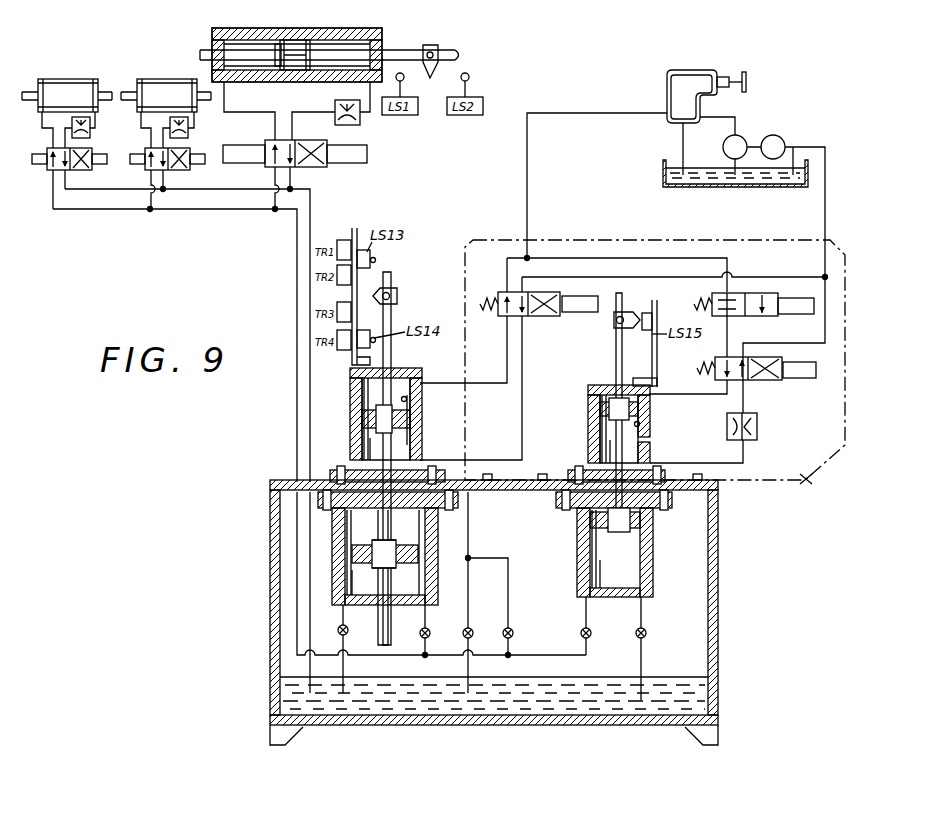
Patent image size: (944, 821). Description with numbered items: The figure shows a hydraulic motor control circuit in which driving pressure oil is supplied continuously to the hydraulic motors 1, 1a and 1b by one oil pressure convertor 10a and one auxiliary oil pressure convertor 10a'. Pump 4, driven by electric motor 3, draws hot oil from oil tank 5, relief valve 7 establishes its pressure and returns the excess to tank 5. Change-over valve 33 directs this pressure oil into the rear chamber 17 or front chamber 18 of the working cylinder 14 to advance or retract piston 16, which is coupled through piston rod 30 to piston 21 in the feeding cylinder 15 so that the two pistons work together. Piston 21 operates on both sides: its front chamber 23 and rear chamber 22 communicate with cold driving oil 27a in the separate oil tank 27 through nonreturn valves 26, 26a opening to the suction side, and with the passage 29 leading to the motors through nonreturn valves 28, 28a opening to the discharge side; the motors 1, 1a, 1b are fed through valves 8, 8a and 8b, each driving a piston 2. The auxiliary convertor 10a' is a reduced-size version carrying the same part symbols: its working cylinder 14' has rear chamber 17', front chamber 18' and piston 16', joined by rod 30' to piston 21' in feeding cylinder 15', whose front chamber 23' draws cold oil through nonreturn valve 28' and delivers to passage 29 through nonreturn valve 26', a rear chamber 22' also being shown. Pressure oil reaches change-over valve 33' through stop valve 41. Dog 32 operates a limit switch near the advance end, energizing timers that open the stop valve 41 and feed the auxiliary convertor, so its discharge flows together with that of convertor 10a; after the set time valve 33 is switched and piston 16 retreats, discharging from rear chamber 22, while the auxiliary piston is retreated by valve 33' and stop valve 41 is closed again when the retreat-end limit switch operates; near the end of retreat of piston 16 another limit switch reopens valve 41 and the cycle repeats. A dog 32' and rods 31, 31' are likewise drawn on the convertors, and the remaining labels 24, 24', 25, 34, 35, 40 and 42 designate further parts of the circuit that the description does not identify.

The hydraulic motor 1 is at (340, 30).
The hydraulic motor 1a is at (176, 79).
The hydraulic motor 1b is at (78, 79).
The piston 2 is at (283, 40).
The electric motor 3 is at (781, 135).
The pump 4 is at (741, 135).
The oil tank 5 is at (772, 187).
The relief valve 7 is at (667, 76).
The change-over valve 8 is at (338, 167).
The valve 8a is at (189, 170).
The valve 8b is at (91, 170).
The oil pressure convertor 10a is at (407, 408).
The auxiliary oil pressure convertor 10a' is at (611, 409).
The working cylinder 14 is at (426, 420).
The working cylinder 14' is at (663, 420).
The feeding cylinder 15 is at (408, 585).
The feeding cylinder 15' is at (640, 549).
The piston 16 is at (410, 430).
The piston 16' is at (591, 409).
The rear chamber 17 is at (340, 419).
The rear chamber 17' is at (575, 419).
The front chamber 18 is at (341, 446).
The sleeve 18' is at (577, 448).
The piston 21 is at (399, 556).
The lower cylinder 21' is at (633, 552).
The rear chamber 22 is at (367, 552).
The inner sleeve 22' is at (564, 549).
The front chamber 23 is at (331, 591).
The front chamber 23' is at (566, 579).
The flange 24 is at (413, 496).
The flange 24' is at (602, 502).
The control unit boundary 25 is at (818, 490).
The nonreturn valve 26 is at (328, 649).
The nonreturn valve 26' is at (566, 626).
The nonreturn valve 26a is at (473, 630).
The oil tank 27 is at (718, 613).
The driving oil 27a is at (672, 670).
The nonreturn valve 28 is at (414, 631).
The nonreturn valve 28' is at (657, 648).
The nonreturn valve 28a is at (513, 638).
The passage 29 is at (180, 211).
The piston rod 30 is at (396, 577).
The gland 30' is at (664, 451).
The rod 31 is at (402, 458).
The rod 31' is at (594, 411).
The dog 32 is at (399, 288).
The dog 32' is at (633, 304).
The change-over valve 33 is at (622, 358).
The change-over valve 33' is at (733, 365).
The check valve 34 is at (90, 130).
The pipe line 35 is at (243, 192).
The flow control valve 40 is at (757, 434).
The stop valve 41 is at (776, 316).
The hydraulic control unit 42 is at (696, 244).